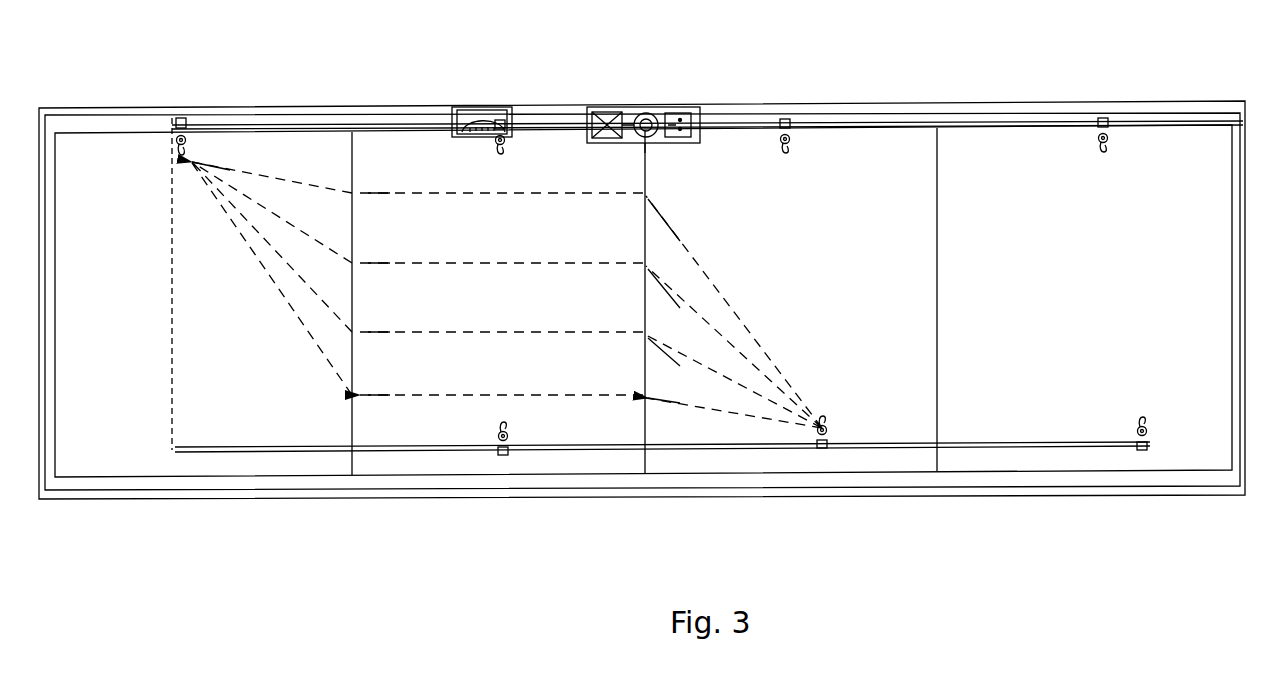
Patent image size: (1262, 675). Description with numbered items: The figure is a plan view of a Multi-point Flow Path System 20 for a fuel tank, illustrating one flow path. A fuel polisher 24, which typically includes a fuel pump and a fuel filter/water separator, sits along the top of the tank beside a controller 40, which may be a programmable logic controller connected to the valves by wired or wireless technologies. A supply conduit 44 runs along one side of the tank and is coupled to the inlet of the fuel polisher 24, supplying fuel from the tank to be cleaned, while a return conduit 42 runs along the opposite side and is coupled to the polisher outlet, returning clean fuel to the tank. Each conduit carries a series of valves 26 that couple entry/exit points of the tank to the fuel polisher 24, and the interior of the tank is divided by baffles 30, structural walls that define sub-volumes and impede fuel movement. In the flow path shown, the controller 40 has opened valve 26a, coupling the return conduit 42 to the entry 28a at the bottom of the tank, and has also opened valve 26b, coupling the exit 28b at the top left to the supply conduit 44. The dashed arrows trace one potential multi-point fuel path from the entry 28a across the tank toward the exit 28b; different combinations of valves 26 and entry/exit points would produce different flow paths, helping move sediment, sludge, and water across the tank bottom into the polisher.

The Multi-point Flow Path System 20 is at (1118, 23).
The fuel polisher 24 is at (648, 108).
The valve 26 is at (787, 125).
The valve 26a is at (822, 447).
The valve 26b is at (184, 121).
The entry 28a is at (823, 418).
The exit 28b is at (177, 148).
The baffle 30 is at (937, 198).
The controller 40 is at (483, 106).
The return conduit 42 is at (233, 450).
The supply conduit 44 is at (916, 124).